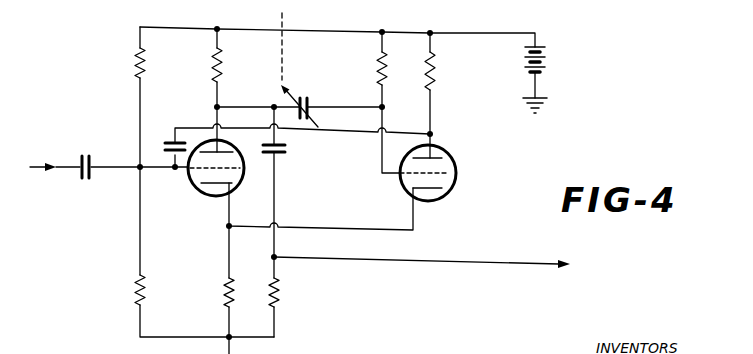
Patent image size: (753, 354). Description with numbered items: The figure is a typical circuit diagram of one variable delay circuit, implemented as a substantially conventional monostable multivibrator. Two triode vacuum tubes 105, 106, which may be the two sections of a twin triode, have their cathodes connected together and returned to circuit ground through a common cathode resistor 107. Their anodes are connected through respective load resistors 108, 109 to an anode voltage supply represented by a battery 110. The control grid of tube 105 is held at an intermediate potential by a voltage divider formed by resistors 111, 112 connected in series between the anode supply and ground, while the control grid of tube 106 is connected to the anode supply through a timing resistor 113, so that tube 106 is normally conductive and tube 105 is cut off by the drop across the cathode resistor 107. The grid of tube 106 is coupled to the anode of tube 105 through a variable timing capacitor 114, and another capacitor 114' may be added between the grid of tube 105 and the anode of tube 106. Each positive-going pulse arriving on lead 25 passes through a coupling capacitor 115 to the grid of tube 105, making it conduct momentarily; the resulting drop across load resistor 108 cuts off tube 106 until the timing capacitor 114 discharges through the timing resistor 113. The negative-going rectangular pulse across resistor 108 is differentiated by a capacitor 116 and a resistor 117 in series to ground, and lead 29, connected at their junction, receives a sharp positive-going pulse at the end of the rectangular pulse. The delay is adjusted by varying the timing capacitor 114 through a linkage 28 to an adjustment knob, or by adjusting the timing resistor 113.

The lead 25 is at (68, 150).
The coupling capacitor 115 is at (87, 152).
The resistor 111 is at (135, 70).
The load resistor 108 is at (209, 78).
The linkage 28 is at (280, 61).
The variable timing capacitor 114 is at (306, 102).
The capacitor 114' is at (170, 128).
The capacitor 116 is at (282, 153).
The triode vacuum tube 105 is at (193, 186).
The triode vacuum tube 106 is at (405, 191).
The timing resistor 113 is at (377, 69).
The load resistor 109 is at (437, 71).
The battery 110 is at (553, 39).
The resistor 112 is at (134, 283).
The common cathode resistor 107 is at (220, 293).
The resistor 117 is at (281, 292).
The lead 29 is at (513, 248).